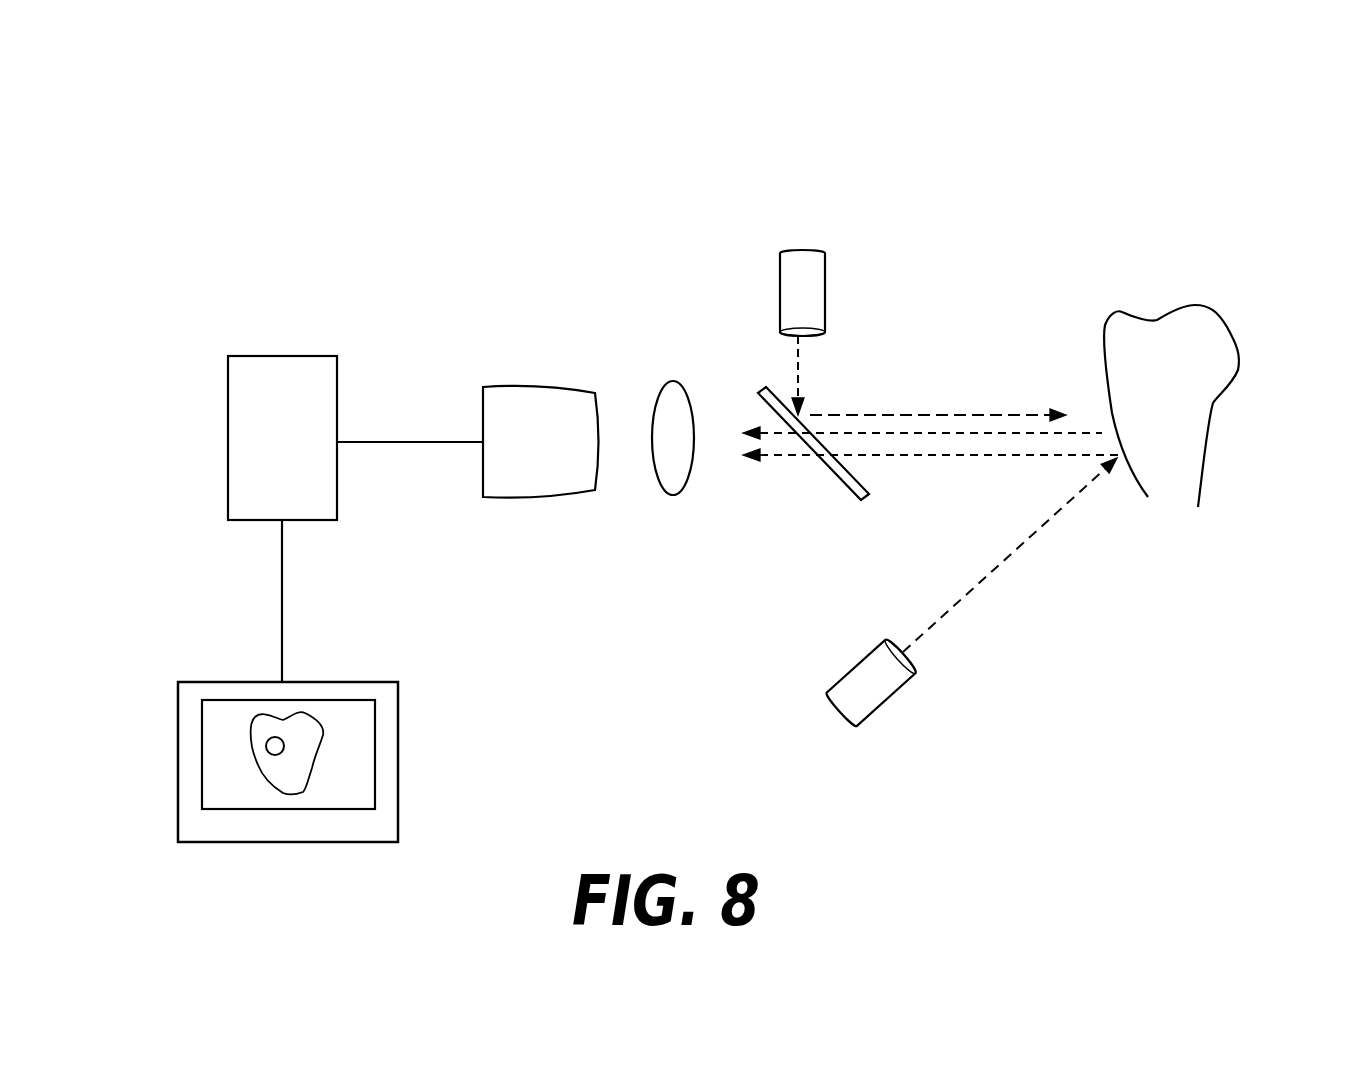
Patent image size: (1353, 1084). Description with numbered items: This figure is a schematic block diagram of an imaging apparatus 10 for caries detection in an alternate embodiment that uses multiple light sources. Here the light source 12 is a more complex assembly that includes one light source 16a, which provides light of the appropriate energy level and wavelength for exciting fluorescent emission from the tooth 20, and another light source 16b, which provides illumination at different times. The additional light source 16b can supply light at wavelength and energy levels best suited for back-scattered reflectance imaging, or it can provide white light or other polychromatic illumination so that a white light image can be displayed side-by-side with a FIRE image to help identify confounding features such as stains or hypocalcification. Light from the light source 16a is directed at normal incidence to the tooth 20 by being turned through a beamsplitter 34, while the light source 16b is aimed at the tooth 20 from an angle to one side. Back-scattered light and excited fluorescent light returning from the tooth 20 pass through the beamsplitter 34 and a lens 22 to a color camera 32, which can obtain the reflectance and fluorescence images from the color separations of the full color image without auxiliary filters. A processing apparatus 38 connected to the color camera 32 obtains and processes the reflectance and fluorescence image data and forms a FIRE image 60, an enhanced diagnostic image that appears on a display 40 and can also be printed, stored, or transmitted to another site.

The imaging apparatus 10 is at (180, 187).
The light source 12 is at (918, 164).
The light source 16a is at (805, 253).
The light source 16b is at (897, 692).
The tooth 20 is at (1226, 311).
The lens 22 is at (673, 381).
The color camera 32 is at (531, 387).
The beamsplitter 34 is at (852, 494).
The processing apparatus 38 is at (228, 440).
The display 40 is at (177, 747).
The FIRE image 60 is at (377, 740).